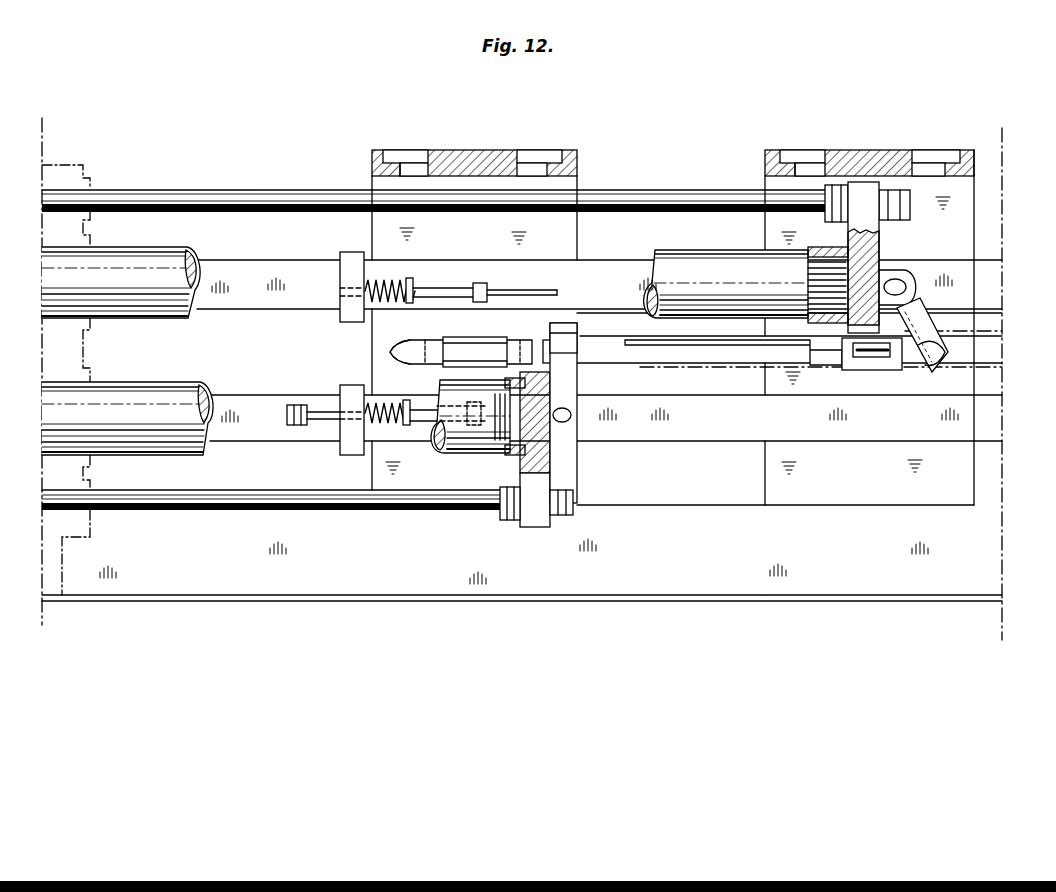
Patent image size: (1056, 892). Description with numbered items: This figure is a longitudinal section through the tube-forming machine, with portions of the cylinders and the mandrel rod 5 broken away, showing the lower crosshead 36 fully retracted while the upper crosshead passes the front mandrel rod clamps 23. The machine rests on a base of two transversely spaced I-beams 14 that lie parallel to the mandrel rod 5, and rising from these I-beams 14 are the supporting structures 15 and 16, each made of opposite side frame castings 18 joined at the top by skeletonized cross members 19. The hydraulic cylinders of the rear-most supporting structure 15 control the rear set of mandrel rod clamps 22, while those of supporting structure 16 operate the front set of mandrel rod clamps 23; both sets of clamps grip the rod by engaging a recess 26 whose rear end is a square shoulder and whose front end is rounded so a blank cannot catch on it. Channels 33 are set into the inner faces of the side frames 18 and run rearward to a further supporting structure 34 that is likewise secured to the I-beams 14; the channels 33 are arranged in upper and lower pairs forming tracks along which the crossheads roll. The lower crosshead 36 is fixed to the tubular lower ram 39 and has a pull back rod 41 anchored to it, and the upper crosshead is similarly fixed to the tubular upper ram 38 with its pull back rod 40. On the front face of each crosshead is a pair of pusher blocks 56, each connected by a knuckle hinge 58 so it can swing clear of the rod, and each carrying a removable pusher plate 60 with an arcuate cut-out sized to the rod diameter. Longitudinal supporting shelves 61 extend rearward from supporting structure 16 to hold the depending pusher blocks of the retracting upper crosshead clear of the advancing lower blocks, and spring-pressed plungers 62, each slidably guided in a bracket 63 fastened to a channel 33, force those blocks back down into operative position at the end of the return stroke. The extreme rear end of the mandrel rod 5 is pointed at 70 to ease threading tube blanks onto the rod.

The mandrel rod 5 is at (992, 350).
The I-beams 14 is at (770, 590).
The supporting structure 15 is at (400, 150).
The supporting structure 16 is at (810, 150).
The side frame castings 18 is at (568, 222).
The skeletonized cross members 19 is at (477, 150).
The rear set of mandrel rod clamps 22 is at (472, 338).
The front set of mandrel rod clamps 23 is at (886, 368).
The recess 26 is at (462, 354).
The channels 33 is at (985, 281).
The supporting structure 34 is at (88, 178).
The lower crosshead 36 is at (555, 462).
The upper tubular ram 38 is at (695, 254).
The lower tubular ram 39 is at (158, 455).
The pull back rod 40 is at (670, 190).
The pull back rod 41 is at (355, 510).
The pusher blocks 56 is at (960, 324).
The knuckle hinge 58 is at (896, 287).
The pusher plates 60 is at (936, 320).
The longitudinal supporting shelves 61 is at (722, 342).
The spring-pressed plungers 62 is at (533, 292).
The bracket 63 is at (352, 325).
The pointed rear end 70 is at (410, 341).